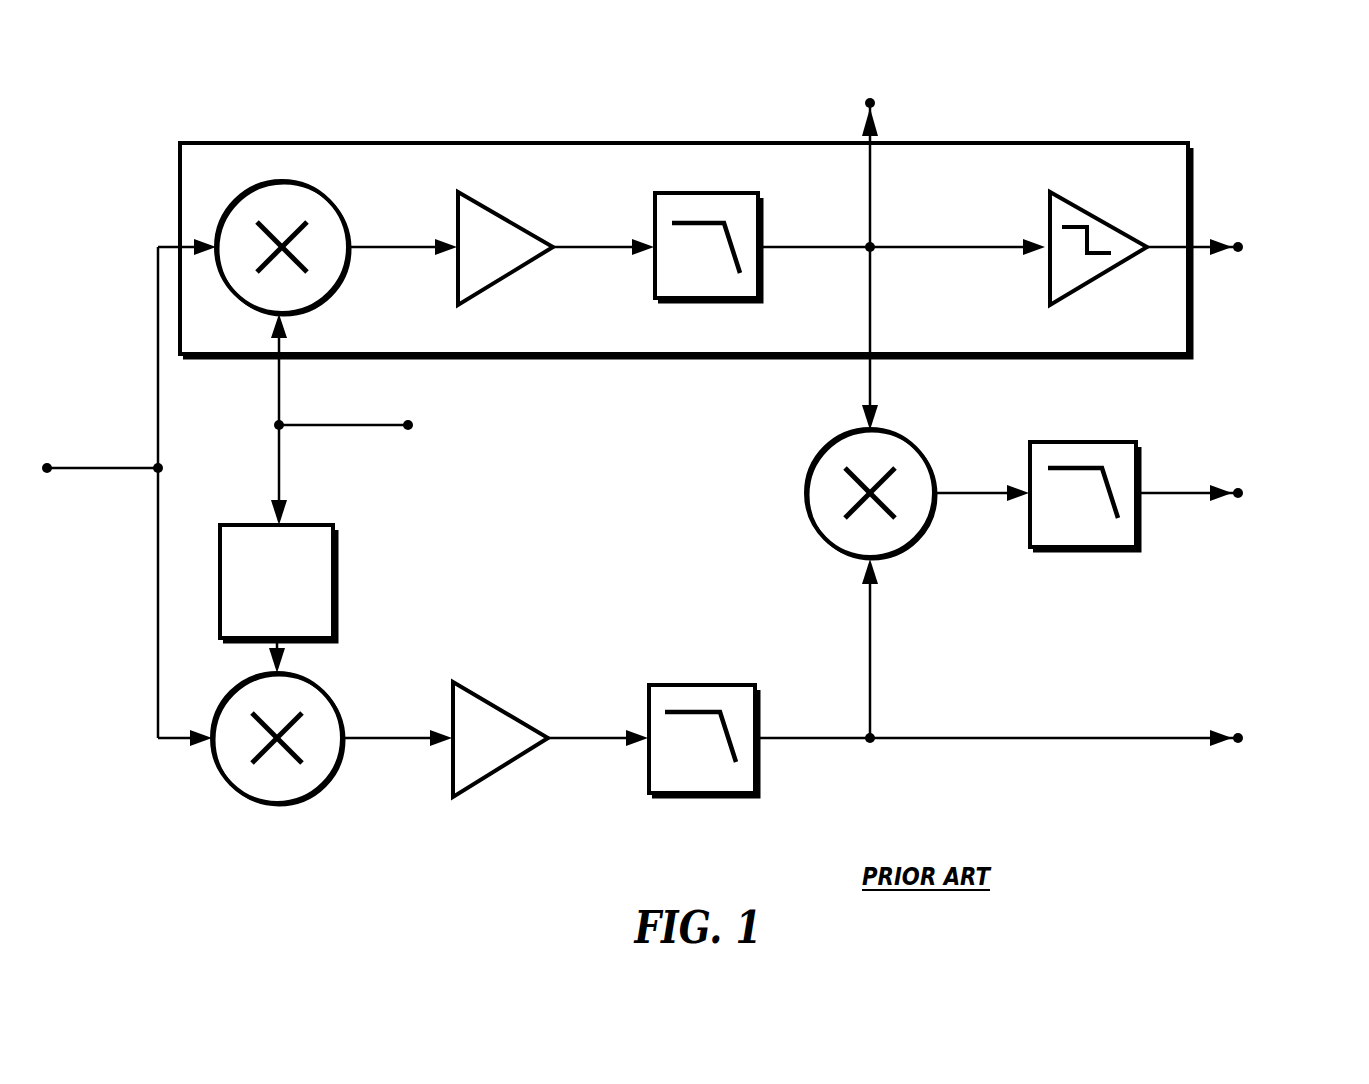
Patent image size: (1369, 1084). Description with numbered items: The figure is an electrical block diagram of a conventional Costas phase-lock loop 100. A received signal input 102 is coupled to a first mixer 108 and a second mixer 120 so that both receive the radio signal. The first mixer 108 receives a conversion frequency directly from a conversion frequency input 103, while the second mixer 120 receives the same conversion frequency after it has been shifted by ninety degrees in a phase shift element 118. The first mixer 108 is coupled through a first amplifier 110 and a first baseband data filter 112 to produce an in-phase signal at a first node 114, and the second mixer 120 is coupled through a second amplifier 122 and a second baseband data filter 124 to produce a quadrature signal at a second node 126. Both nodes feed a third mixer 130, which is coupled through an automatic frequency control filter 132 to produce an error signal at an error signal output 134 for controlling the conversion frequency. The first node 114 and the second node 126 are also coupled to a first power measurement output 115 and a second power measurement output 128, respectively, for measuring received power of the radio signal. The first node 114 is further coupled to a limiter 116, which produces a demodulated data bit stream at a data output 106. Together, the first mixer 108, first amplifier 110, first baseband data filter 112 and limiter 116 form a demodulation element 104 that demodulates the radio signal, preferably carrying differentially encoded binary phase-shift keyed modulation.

The Costas phase-lock loop 100 is at (707, 890).
The received signal input 102 is at (45, 466).
The conversion frequency input 103 is at (410, 422).
The demodulation element 104 is at (1194, 157).
The data output 106 is at (1240, 244).
The first mixer 108 is at (300, 190).
The first amplifier 110 is at (500, 210).
The first baseband data filter 112 is at (765, 205).
The first node 114 is at (874, 242).
The first power measurement output 115 is at (876, 100).
The limiter 116 is at (1090, 212).
The phase shift element 118 is at (313, 524).
The second mixer 120 is at (318, 690).
The second amplifier 122 is at (492, 702).
The second baseband data filter 124 is at (700, 685).
The second node 126 is at (872, 735).
The second power measurement output 128 is at (1240, 735).
The third mixer 130 is at (912, 440).
The automatic frequency control (AFC) filter 132 is at (1083, 442).
The error signal output 134 is at (1240, 490).